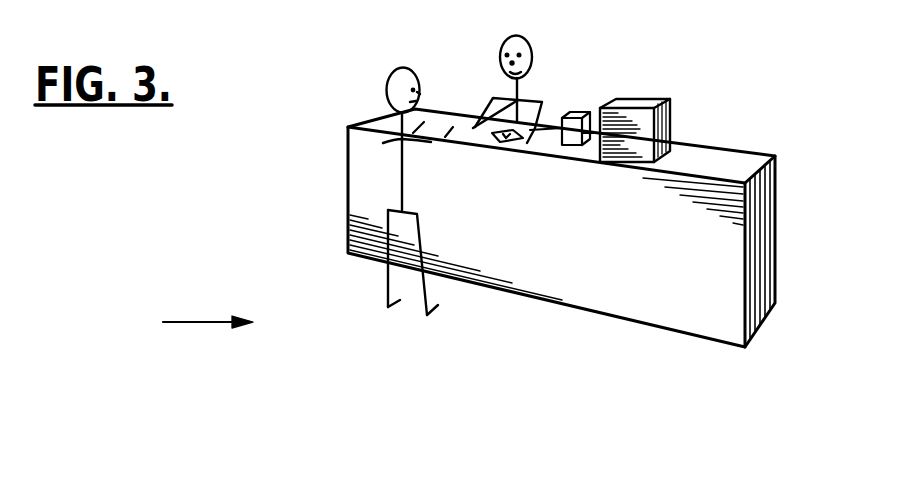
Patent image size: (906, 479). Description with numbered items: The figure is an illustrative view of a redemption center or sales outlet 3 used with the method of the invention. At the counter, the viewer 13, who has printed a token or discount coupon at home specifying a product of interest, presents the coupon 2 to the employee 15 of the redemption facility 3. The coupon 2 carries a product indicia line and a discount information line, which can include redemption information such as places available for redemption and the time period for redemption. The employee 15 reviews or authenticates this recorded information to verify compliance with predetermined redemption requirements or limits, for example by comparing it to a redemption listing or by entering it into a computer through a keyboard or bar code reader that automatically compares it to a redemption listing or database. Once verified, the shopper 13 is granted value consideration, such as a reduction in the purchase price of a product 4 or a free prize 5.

The coupon 2 is at (503, 145).
The redemption center 3 is at (197, 322).
The product 4 is at (667, 100).
The free prize 5 is at (580, 113).
The viewer 13 is at (403, 183).
The employee 15 is at (517, 95).